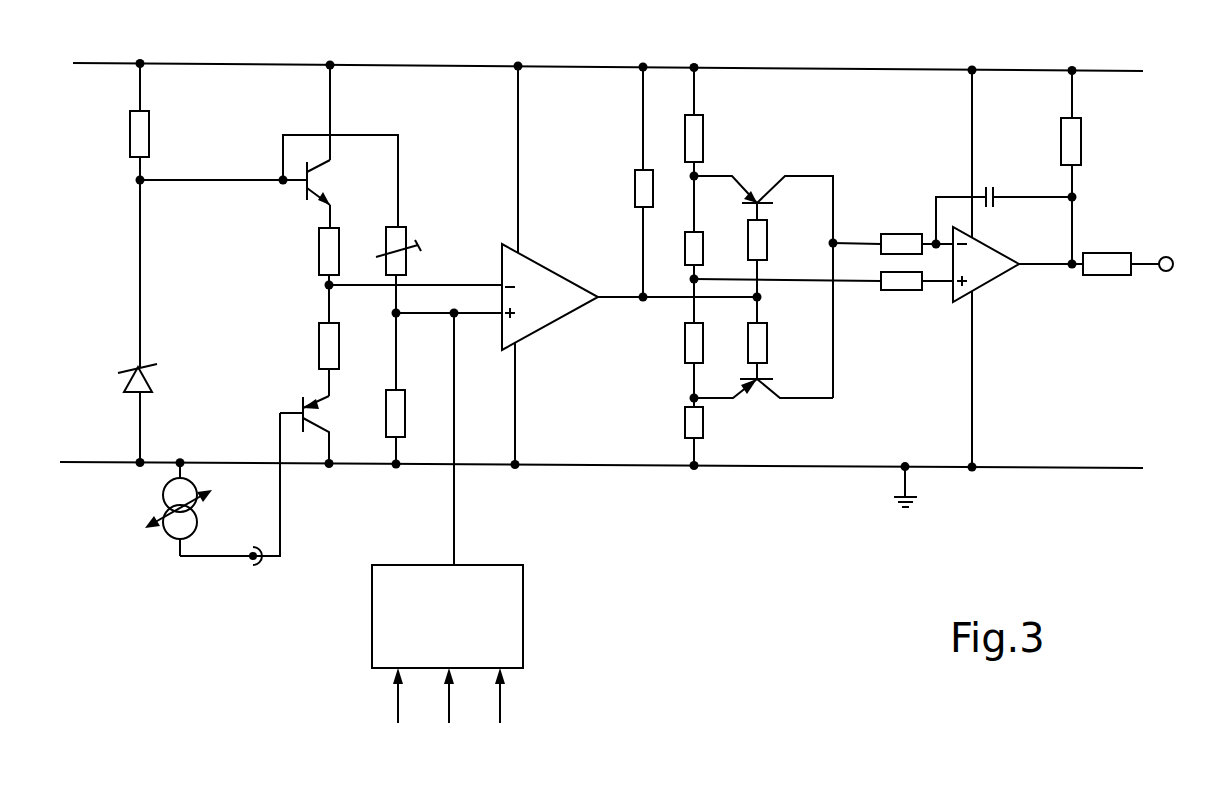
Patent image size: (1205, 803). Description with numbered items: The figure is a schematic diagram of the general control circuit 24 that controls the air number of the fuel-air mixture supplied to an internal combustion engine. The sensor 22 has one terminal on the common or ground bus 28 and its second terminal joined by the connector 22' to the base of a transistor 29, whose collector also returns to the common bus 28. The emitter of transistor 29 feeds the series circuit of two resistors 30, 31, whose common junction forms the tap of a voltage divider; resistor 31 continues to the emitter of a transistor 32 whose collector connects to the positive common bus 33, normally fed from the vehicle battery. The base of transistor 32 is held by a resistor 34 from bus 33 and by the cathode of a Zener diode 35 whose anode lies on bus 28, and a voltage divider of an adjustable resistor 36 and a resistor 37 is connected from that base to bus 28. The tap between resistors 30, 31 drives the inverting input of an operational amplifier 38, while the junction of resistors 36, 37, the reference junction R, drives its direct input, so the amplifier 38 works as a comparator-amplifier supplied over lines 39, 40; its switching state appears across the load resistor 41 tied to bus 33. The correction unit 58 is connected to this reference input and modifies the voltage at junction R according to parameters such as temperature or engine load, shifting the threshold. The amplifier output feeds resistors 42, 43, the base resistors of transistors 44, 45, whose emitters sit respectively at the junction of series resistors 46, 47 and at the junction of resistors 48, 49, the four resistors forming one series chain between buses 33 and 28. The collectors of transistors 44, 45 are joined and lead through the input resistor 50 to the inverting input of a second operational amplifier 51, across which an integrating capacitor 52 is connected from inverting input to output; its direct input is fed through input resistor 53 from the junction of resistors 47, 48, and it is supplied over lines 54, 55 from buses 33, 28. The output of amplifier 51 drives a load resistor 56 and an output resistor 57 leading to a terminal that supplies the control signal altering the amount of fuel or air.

The sensor 22 is at (172, 509).
The connector 22' is at (253, 489).
The general control circuit 24 is at (774, 498).
The common bus 28 is at (607, 468).
The transistor 29 is at (312, 417).
The resistor 30 is at (328, 345).
The resistor 31 is at (328, 255).
The transistor 32 is at (312, 180).
The positive common bus 33 is at (398, 63).
The resistor 34 is at (141, 118).
The Zener diode 35 is at (145, 385).
The variable resistor 36 is at (400, 237).
The resistor 37 is at (397, 400).
The operational amplifier 38 is at (558, 311).
The power supply line 39 is at (518, 148).
The power supply line 40 is at (516, 395).
The load resistor 41 is at (643, 190).
The resistor 42 is at (758, 243).
The resistor 43 is at (757, 352).
The transistor 44 is at (760, 197).
The transistor 45 is at (755, 390).
The resistor 46 is at (693, 153).
The resistor 47 is at (695, 246).
The resistor 48 is at (693, 352).
The resistor 49 is at (695, 430).
The input resistor 50 is at (900, 244).
The operational amplifier 51 is at (992, 292).
The integrating capacitor 52 is at (996, 197).
The input resistor 53 is at (905, 290).
The supply line 54 is at (972, 142).
The supply line 55 is at (972, 403).
The load resistor 56 is at (1074, 133).
The output resistor 57 is at (1110, 268).
The correction unit 58 is at (513, 611).
The reference junction R is at (396, 313).